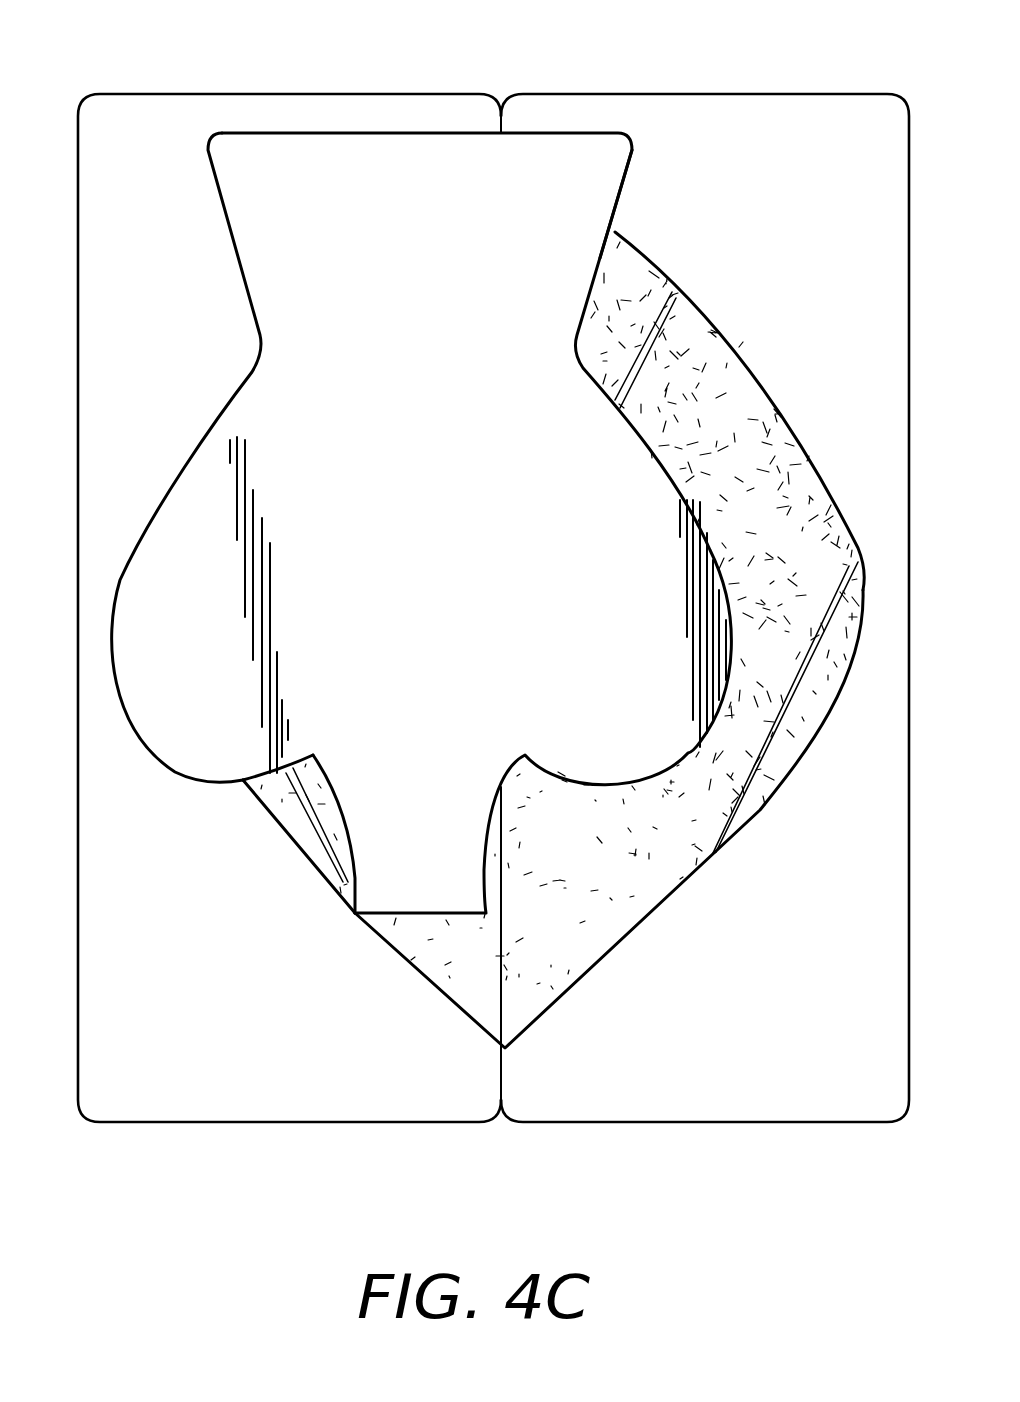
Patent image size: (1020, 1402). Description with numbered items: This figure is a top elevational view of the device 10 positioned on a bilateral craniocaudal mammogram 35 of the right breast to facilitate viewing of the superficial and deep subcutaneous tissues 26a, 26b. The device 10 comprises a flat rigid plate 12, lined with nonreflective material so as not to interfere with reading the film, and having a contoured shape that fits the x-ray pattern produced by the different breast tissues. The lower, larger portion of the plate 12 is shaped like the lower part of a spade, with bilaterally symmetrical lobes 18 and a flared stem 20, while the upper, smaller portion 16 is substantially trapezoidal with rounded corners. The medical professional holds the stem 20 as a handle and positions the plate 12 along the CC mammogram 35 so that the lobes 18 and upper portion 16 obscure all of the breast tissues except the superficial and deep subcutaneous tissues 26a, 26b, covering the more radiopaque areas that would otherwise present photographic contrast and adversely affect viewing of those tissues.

The device 10 is at (301, 122).
The plate 12 is at (425, 534).
The upper portion 16 is at (623, 198).
The lobes 18 is at (757, 807).
The flared stem 20 is at (372, 890).
The superficial subcutaneous tissue 26a is at (735, 312).
The deep subcutaneous tissue 26b is at (730, 422).
The craniocaudal view mammogram 35 is at (826, 80).